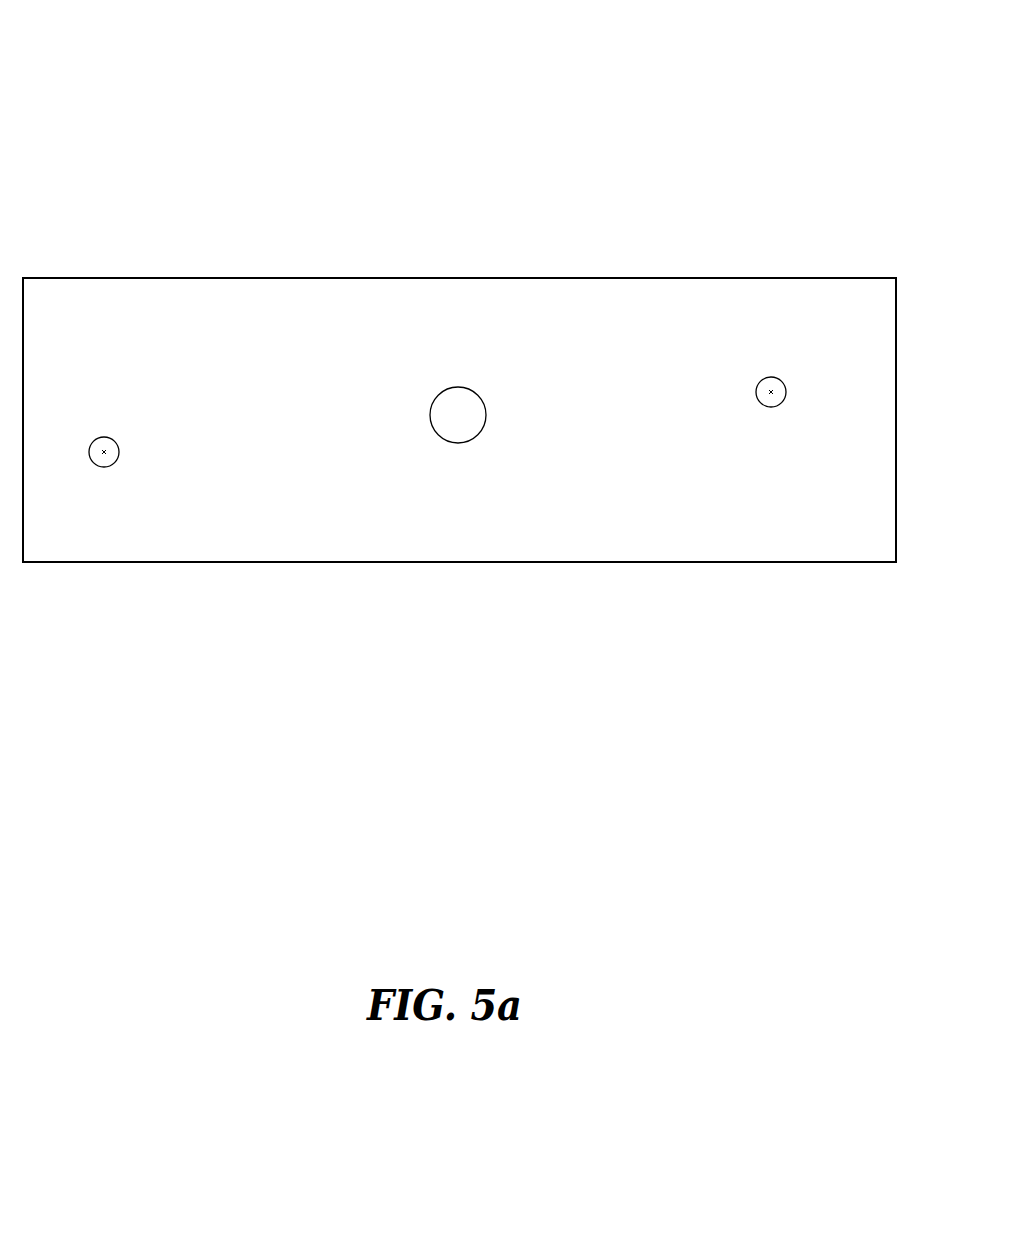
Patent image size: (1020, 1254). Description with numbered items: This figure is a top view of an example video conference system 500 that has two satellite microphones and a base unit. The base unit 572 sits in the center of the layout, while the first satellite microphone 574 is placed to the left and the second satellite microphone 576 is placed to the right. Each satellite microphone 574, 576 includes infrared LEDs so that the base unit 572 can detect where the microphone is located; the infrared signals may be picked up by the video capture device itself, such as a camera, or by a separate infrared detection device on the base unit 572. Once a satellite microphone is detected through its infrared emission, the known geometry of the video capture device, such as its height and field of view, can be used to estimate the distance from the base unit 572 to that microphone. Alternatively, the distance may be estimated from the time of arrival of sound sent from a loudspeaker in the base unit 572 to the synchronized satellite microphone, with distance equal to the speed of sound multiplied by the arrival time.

The video conference system 500 is at (756, 80).
The base unit 572 is at (436, 380).
The satellite microphone S1 574 is at (108, 414).
The satellite microphone S2 576 is at (764, 360).